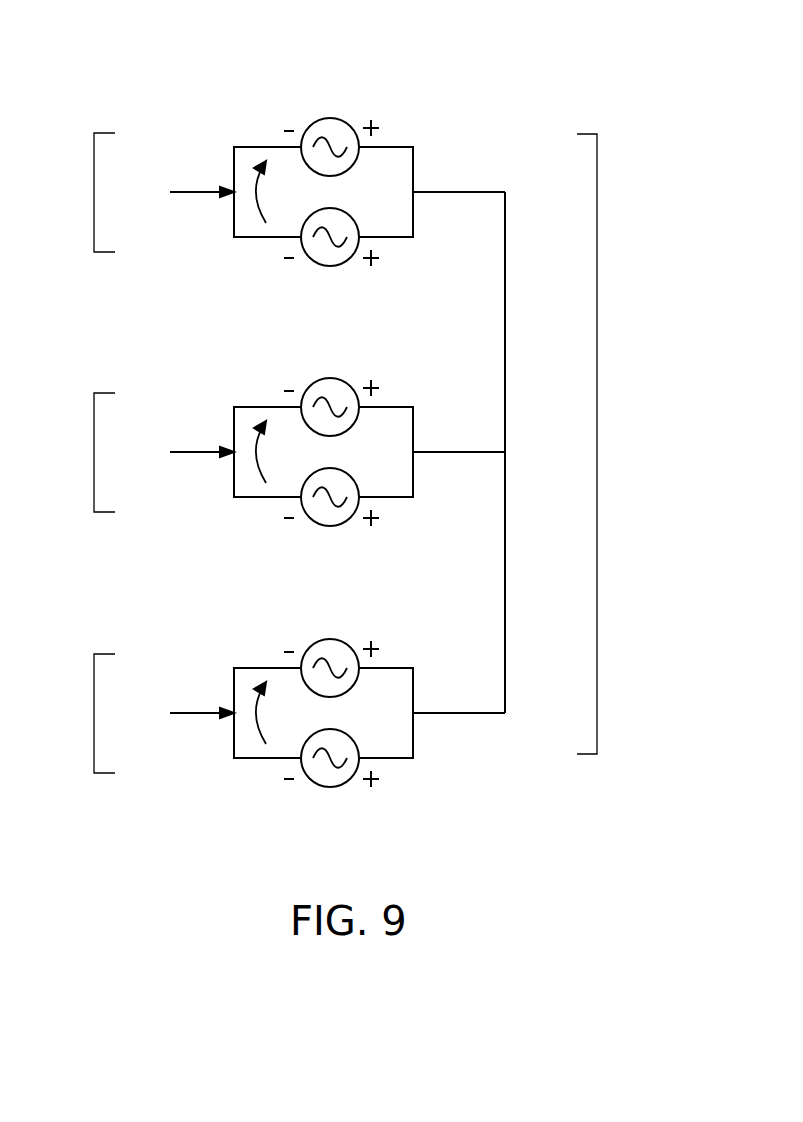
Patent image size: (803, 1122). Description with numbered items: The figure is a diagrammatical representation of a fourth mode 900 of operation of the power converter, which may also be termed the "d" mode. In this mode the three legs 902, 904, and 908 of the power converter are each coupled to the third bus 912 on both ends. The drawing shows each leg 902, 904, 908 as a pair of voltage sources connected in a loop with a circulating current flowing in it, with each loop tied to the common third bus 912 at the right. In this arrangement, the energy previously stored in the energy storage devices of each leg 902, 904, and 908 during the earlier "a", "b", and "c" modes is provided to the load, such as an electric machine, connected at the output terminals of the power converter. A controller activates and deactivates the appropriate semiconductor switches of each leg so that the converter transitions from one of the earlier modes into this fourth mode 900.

The fourth mode of operation 900 is at (146, 57).
The leg 904 is at (94, 192).
The leg 902 is at (94, 452).
The leg 908 is at (94, 713).
The third bus 912 is at (597, 444).